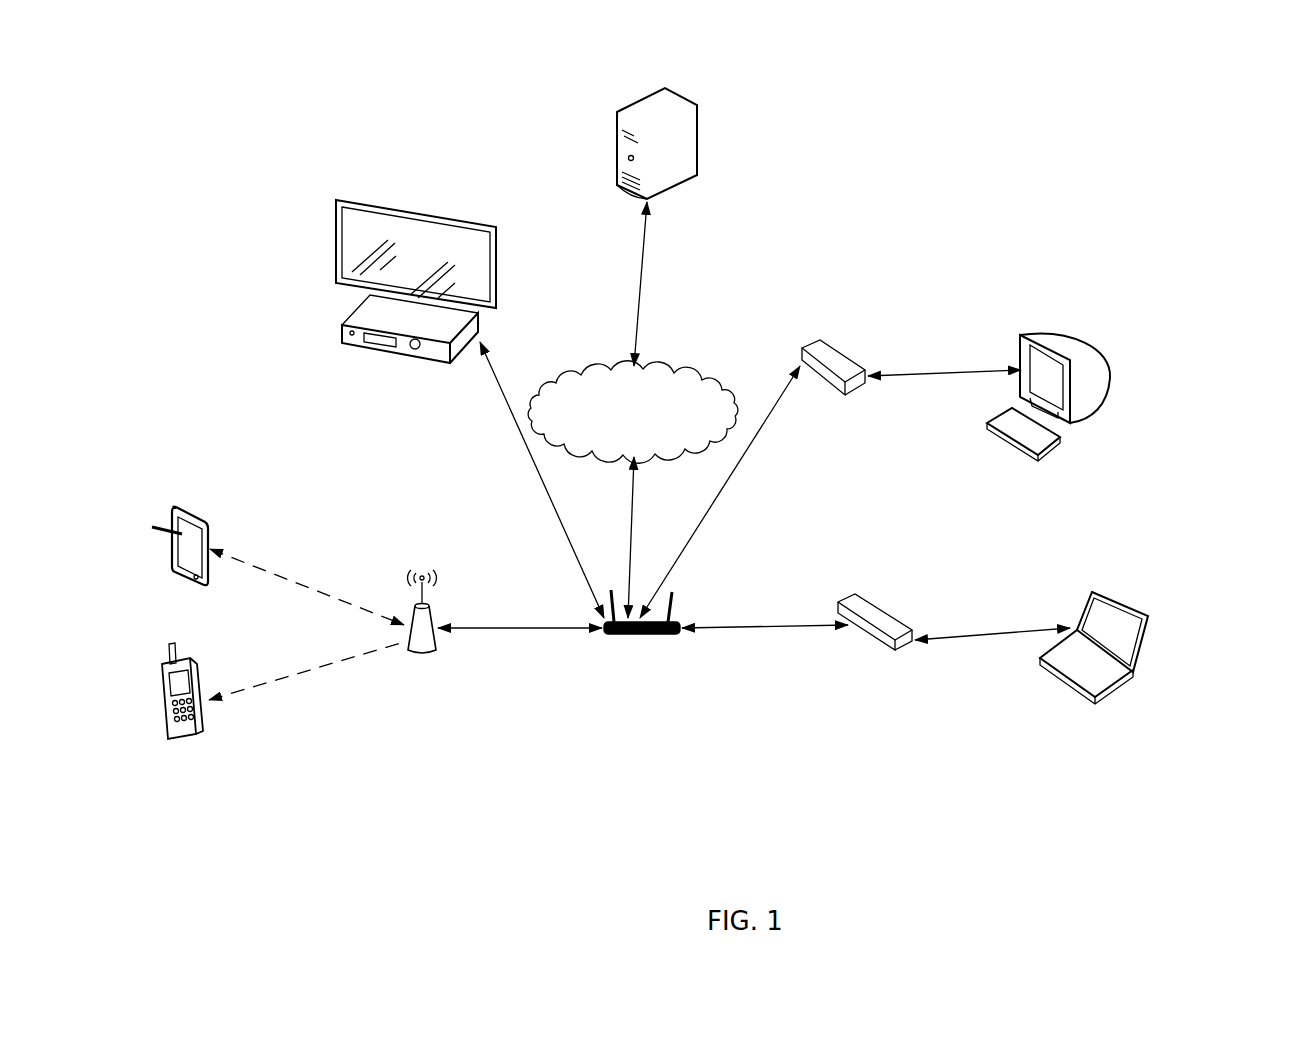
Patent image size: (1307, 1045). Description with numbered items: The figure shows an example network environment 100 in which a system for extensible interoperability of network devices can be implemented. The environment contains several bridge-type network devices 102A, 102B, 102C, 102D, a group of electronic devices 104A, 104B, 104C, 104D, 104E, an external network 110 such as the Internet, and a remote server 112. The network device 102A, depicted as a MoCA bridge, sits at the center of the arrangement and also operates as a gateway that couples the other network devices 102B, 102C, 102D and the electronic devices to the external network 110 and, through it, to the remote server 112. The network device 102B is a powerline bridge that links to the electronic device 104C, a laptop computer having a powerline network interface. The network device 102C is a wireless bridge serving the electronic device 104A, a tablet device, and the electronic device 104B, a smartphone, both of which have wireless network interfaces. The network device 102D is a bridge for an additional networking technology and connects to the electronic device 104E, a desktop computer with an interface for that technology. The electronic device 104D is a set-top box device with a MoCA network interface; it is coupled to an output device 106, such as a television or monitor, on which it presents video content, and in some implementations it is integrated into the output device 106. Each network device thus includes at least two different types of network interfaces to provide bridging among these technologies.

The network environment 100 is at (1228, 116).
The network device 102A is at (672, 618).
The network device 102B is at (883, 608).
The network device 102C is at (433, 600).
The network device 102D is at (818, 340).
The electronic device 104A is at (210, 520).
The electronic device 104B is at (212, 666).
The electronic device 104C is at (1150, 620).
The electronic device 104D is at (342, 326).
The electronic device 104E is at (1086, 343).
The output device 106 is at (430, 222).
The external network 110 is at (665, 366).
The remote server 112 is at (700, 122).